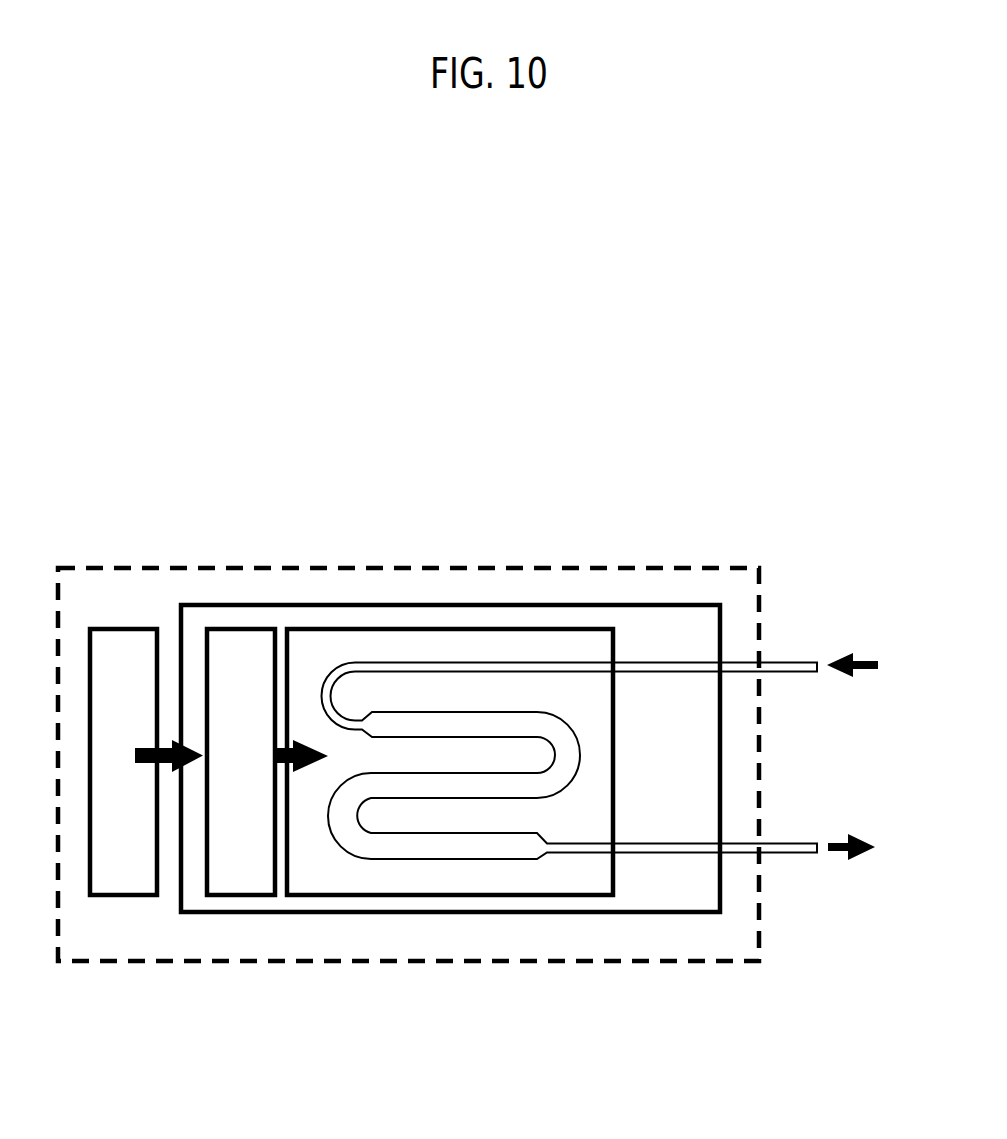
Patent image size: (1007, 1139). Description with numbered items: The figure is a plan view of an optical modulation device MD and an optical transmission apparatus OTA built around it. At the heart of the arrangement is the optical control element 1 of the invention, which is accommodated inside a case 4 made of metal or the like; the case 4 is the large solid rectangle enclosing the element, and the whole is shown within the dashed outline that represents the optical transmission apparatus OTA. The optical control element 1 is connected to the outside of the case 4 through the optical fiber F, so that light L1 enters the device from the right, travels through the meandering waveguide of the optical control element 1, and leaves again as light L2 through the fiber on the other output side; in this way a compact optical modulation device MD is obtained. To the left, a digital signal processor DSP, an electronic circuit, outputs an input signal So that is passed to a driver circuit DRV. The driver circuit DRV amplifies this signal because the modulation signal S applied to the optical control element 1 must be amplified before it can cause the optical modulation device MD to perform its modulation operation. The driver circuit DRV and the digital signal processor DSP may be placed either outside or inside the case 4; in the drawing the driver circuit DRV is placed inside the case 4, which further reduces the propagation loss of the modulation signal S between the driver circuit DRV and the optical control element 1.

The optical transmission apparatus OTA is at (242, 962).
The digital signal processor DSP is at (120, 632).
The driver circuit DRV is at (238, 627).
The optical modulation device MD is at (519, 772).
The case 4 is at (587, 604).
The optical control element 1 is at (464, 627).
The optical fiber F is at (790, 653).
The input light L1 is at (871, 665).
The output light L2 is at (871, 845).
The input signal So is at (160, 741).
The modulation signal S is at (301, 741).